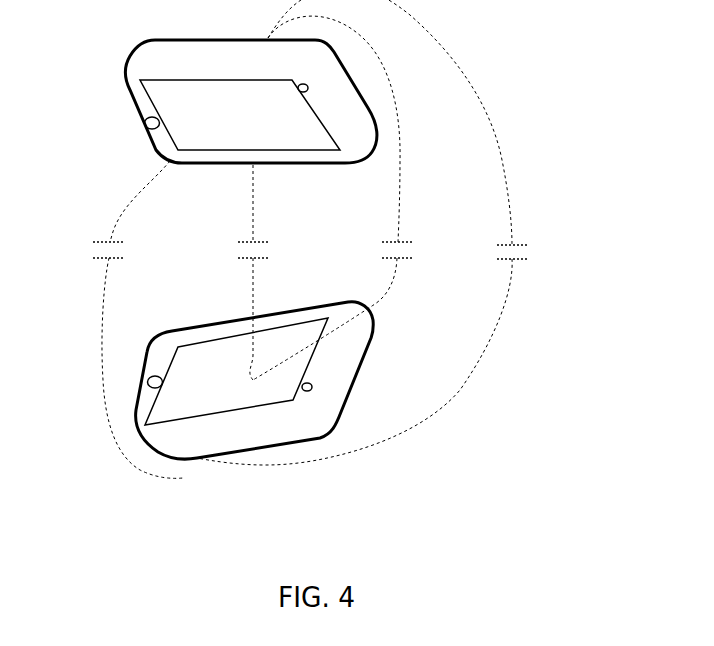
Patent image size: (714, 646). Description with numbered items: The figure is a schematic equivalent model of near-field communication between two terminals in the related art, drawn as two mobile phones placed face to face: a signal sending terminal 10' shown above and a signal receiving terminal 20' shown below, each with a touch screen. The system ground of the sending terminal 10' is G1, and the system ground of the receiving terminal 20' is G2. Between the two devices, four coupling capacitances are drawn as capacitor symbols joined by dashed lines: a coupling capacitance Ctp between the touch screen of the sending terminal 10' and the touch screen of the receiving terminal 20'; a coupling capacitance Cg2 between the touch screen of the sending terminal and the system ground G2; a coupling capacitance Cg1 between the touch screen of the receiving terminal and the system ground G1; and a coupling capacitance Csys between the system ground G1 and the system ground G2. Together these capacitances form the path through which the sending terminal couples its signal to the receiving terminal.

The first electronic device 10' is at (209, 89).
The second electronic device 20' is at (292, 402).
The system ground of the first mobile phone G1 is at (268, 39).
The system ground of the second mobile phone G2 is at (198, 456).
The coupling capacitance between second touch screen and first system ground Cg1 is at (355, 198).
The coupling capacitance between first touch screen and second system ground Cg2 is at (138, 319).
The coupling capacitance between touch screens Ctp is at (274, 272).
The coupling capacitance between system grounds Csys is at (393, 232).